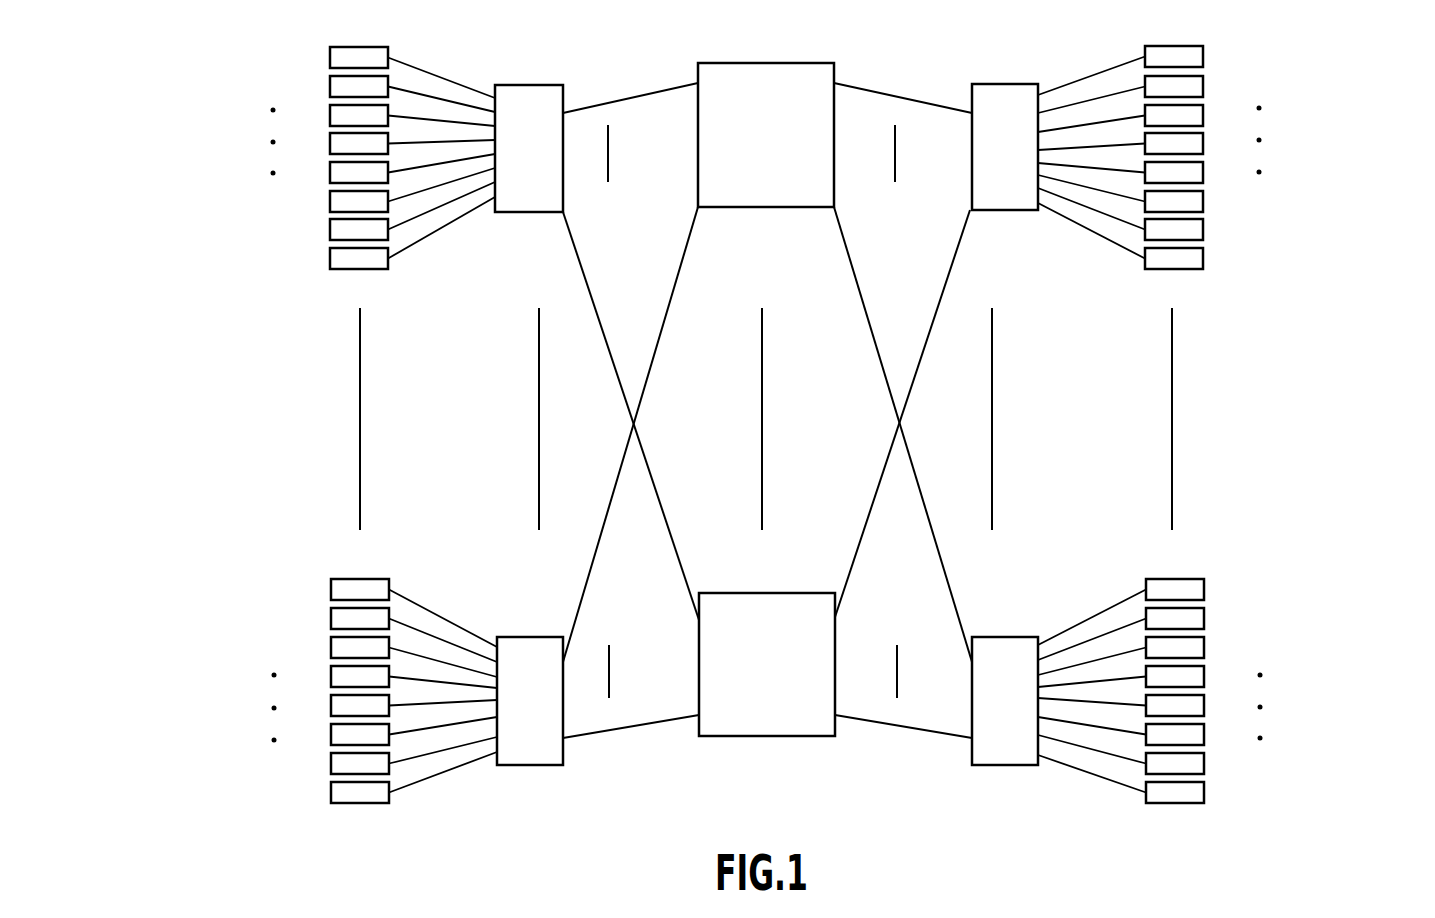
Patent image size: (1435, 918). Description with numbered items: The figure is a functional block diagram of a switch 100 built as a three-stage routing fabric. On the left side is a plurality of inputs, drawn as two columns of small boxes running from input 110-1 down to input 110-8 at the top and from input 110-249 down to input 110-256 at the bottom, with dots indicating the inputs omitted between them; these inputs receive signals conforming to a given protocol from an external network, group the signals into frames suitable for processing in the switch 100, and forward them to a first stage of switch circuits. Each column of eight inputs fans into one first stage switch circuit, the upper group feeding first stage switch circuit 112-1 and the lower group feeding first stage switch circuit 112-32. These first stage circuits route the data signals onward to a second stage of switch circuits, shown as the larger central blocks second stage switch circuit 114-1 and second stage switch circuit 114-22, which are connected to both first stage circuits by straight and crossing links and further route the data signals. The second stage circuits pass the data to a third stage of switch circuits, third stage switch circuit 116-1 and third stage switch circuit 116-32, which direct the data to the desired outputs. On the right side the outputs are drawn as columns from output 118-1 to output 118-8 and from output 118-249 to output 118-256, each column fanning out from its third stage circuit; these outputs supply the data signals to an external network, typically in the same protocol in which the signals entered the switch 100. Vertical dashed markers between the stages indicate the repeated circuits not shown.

The switch 100 is at (1302, 165).
The input 110-1 is at (330, 58).
The input 110-8 is at (330, 258).
The input 110-249 is at (331, 596).
The input 110-256 is at (331, 786).
The first stage switch circuit 112-1 is at (500, 212).
The first stage switch circuit 112-32 is at (534, 765).
The second stage switch circuit 114-1 is at (727, 63).
The second stage switch circuit 114-22 is at (762, 736).
The third stage switch circuit 116-1 is at (976, 84).
The third stage switch circuit 116-32 is at (992, 765).
The output 118-1 is at (1203, 57).
The output 118-8 is at (1203, 258).
The output 118-249 is at (1205, 588).
The output 118-256 is at (1205, 788).